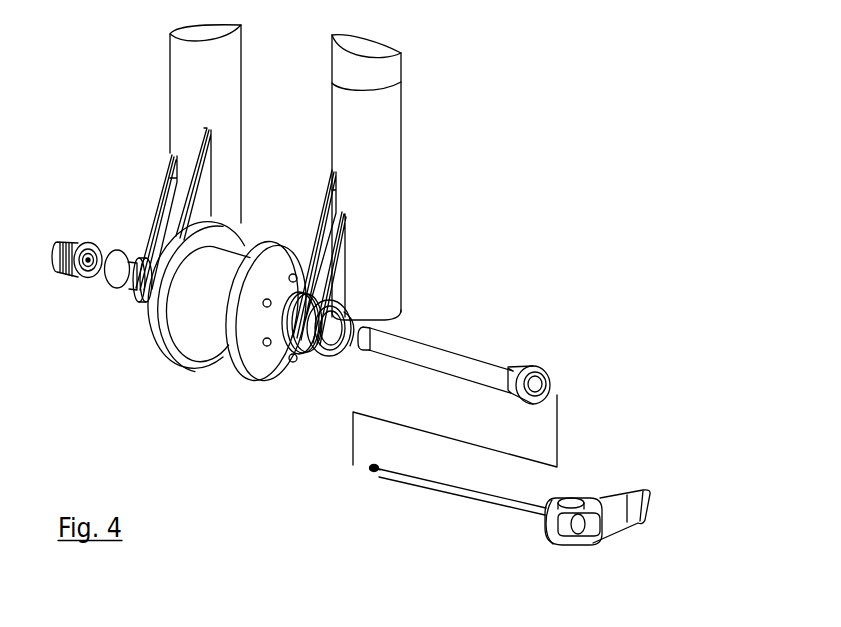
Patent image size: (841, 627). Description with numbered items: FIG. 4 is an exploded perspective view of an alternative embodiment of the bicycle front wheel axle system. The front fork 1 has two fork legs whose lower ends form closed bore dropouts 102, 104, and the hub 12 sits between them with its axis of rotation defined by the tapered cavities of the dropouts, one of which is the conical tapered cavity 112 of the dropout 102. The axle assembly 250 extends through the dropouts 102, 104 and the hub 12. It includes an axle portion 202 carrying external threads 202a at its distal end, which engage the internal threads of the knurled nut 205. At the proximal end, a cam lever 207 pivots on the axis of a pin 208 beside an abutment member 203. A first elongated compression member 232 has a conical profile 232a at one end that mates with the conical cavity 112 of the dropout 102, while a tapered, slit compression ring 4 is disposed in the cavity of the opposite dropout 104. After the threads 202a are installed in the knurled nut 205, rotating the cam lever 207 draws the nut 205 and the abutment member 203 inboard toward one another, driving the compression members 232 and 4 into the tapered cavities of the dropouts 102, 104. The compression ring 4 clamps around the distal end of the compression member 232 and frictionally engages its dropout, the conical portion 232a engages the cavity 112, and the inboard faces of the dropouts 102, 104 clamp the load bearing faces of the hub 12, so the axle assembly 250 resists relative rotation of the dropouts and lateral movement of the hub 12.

The front fork 1 is at (397, 94).
The compression ring 4 is at (117, 263).
The hub 12 is at (193, 333).
The closed bore dropout 102 is at (297, 332).
The closed bore dropout 104 is at (143, 287).
The conical tapered cavity 112 is at (329, 336).
The axle portion 202 is at (478, 503).
The external threads 202a is at (372, 474).
The abutment member 203 is at (543, 530).
The knurled nut 205 is at (63, 243).
The cam lever 207 is at (635, 519).
The pin 208 is at (575, 501).
The first elongated compression member 232 is at (490, 362).
The conical profile 232a is at (518, 368).
The axle assembly 250 is at (640, 406).